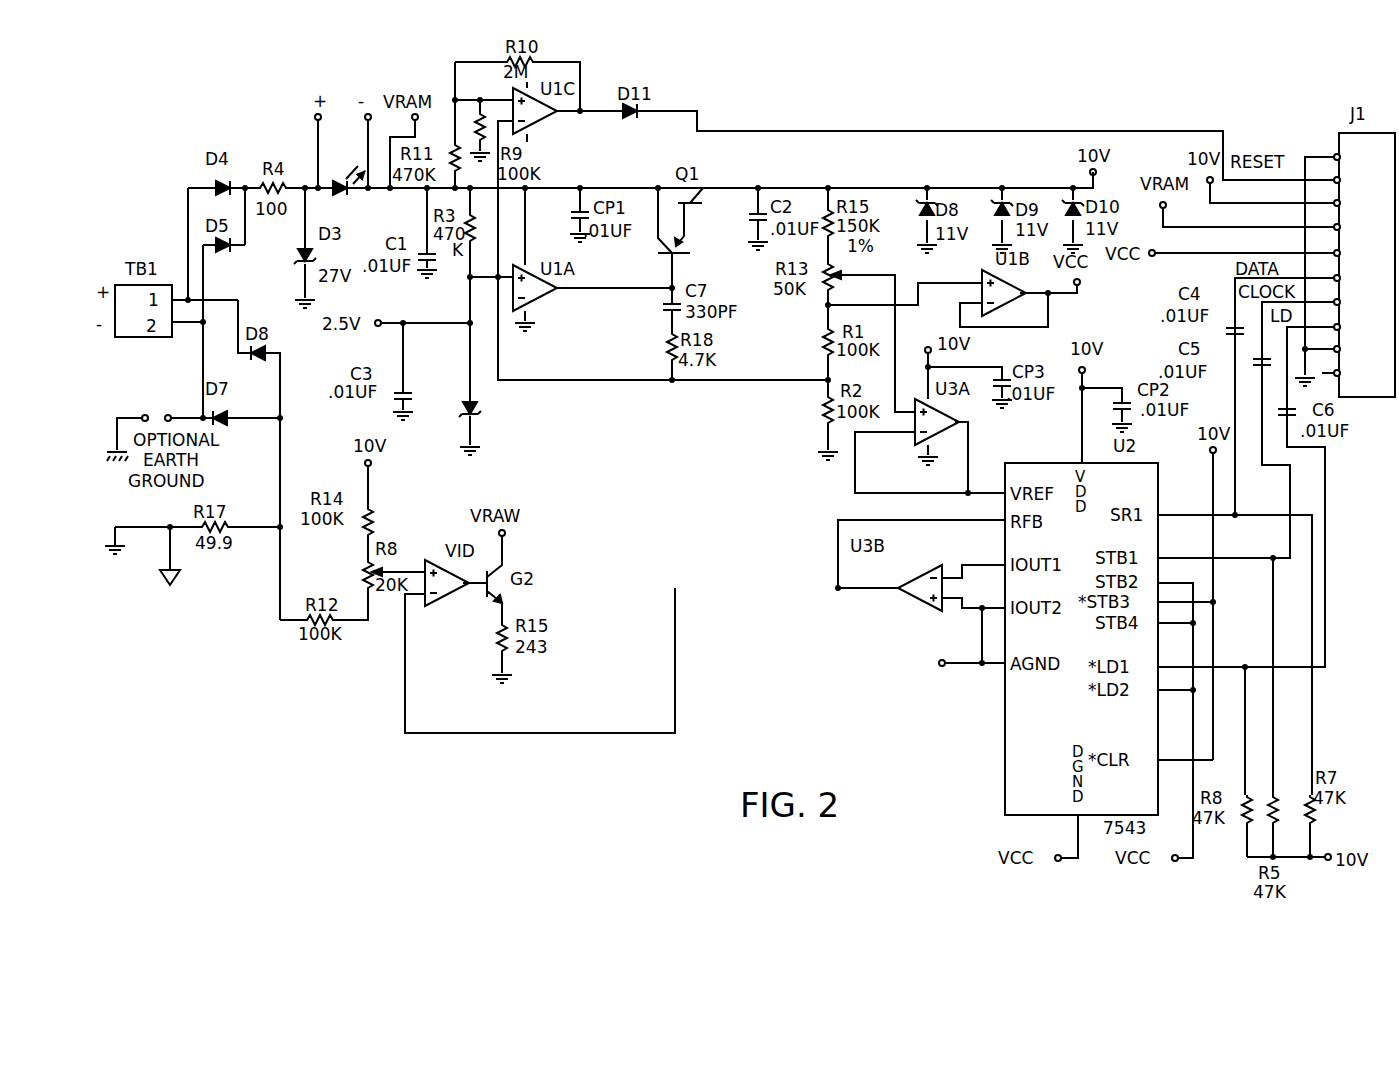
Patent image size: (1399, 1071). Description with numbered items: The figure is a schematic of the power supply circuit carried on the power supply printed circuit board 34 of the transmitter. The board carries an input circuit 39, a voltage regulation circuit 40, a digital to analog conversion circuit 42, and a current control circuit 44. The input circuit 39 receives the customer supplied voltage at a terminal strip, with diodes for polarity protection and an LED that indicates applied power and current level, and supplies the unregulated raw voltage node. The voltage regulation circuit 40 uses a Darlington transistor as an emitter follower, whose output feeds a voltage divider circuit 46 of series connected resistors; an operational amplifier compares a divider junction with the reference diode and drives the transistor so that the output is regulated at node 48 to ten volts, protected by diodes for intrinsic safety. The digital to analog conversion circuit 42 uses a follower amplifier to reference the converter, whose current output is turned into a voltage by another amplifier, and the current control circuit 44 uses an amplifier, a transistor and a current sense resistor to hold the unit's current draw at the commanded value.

The power supply printed circuit board 34 is at (625, 752).
The input circuit 39 is at (378, 85).
The voltage regulation circuit 40 is at (670, 85).
The digital to analog conversion circuit 42 is at (918, 690).
The current control circuit 44 is at (505, 487).
The voltage divider circuit 46 is at (800, 327).
The node 48 is at (1098, 176).